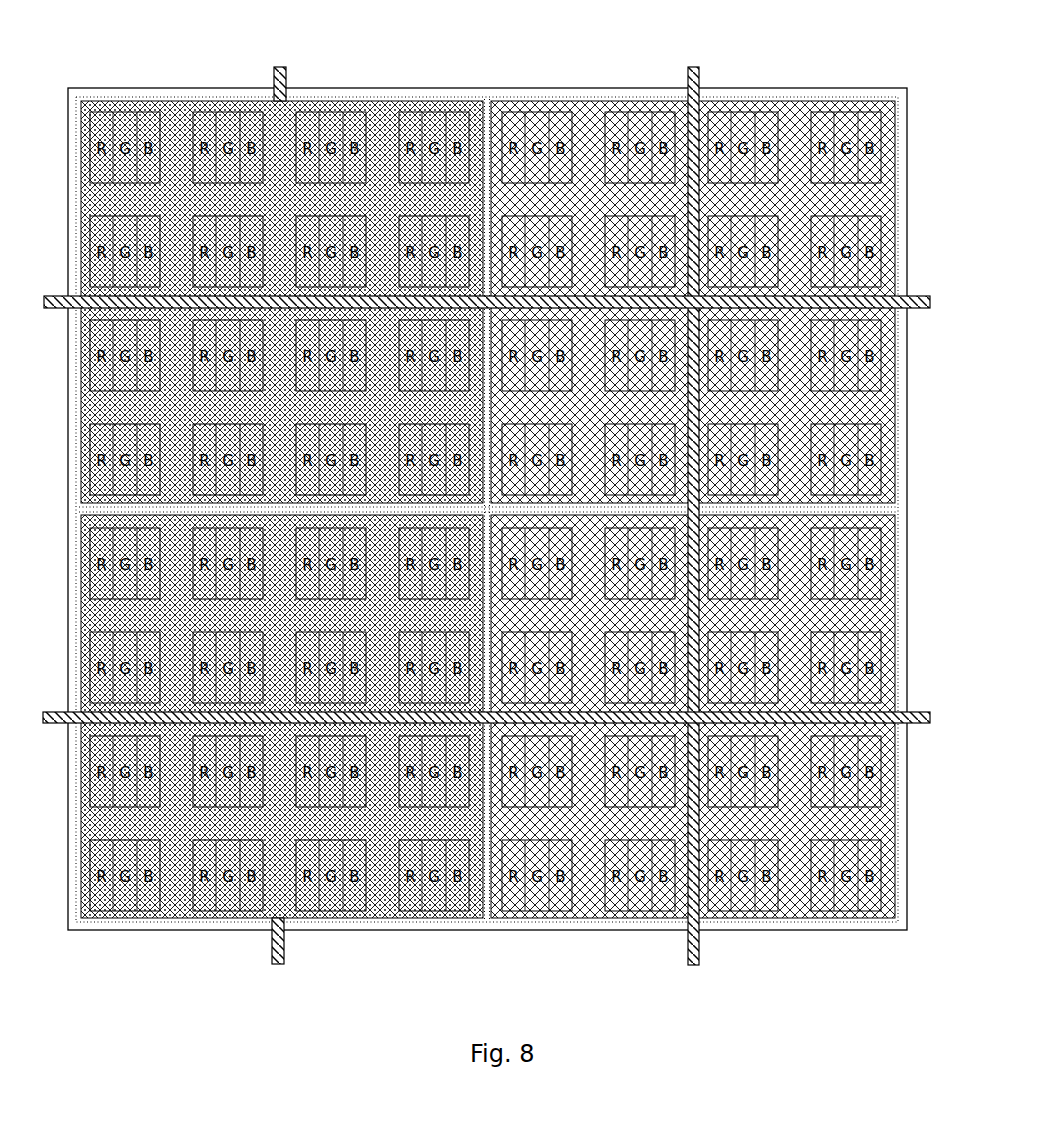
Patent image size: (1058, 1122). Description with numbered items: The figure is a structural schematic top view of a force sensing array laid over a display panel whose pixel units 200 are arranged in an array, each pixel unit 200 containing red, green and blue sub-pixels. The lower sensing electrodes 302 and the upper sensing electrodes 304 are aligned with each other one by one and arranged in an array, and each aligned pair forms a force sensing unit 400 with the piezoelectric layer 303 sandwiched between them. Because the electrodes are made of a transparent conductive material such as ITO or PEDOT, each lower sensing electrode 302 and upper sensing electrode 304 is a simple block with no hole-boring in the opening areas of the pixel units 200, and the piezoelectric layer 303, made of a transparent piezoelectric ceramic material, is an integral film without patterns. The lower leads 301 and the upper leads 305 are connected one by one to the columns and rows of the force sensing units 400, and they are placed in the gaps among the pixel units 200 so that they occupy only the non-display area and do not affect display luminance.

The force sensing unit 400 is at (103, 88).
The lower lead 301 is at (285, 68).
The lower sensing electrode 302 is at (693, 516).
The piezoelectric layer 303 is at (497, 99).
The pixel unit 200 is at (545, 127).
The upper sensing electrode 304 is at (806, 104).
The upper lead 305 is at (918, 297).